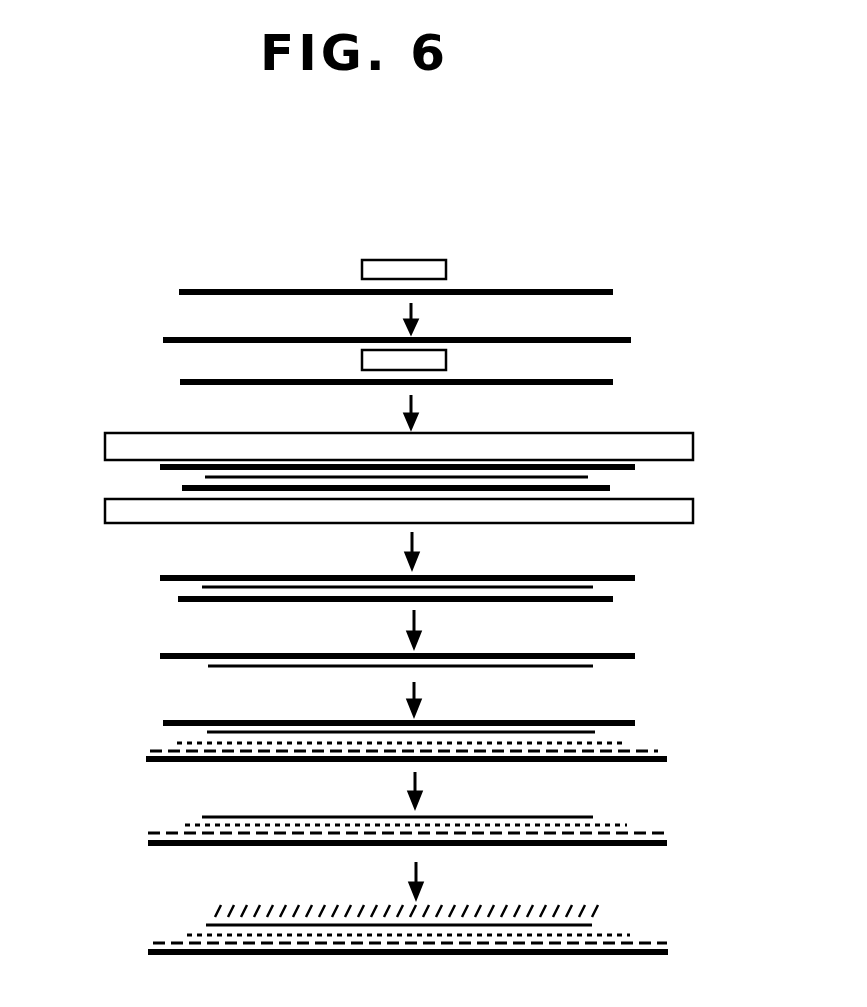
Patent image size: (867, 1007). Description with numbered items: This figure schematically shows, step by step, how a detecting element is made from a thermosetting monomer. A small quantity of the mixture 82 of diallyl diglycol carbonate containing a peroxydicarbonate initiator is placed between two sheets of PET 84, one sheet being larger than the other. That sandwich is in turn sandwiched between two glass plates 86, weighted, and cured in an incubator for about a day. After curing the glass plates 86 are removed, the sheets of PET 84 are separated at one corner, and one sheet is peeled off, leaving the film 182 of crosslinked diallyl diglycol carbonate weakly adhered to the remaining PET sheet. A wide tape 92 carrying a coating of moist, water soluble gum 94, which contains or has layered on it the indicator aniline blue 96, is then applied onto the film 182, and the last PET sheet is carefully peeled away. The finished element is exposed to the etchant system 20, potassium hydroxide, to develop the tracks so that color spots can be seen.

The mixture 82 is at (446, 268).
The sheets of PET 84 is at (613, 292).
The glass plates 86 is at (693, 446).
The film of CR-39 182 is at (593, 587).
The aniline blue 96 is at (177, 743).
The water soluble gum 94 is at (658, 751).
The wide tape 92 is at (667, 759).
The etchant system 20 is at (406, 896).